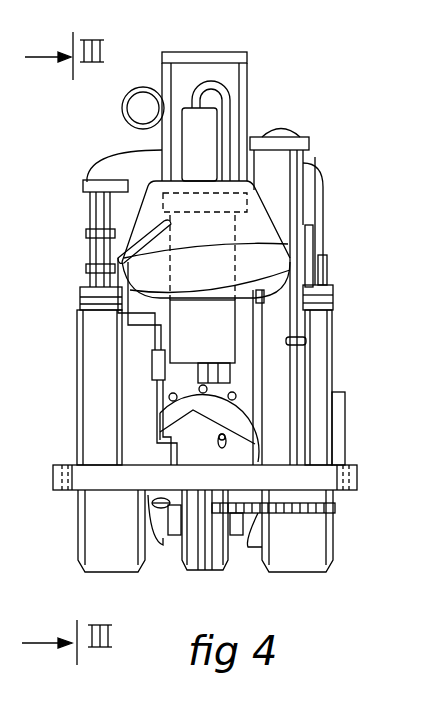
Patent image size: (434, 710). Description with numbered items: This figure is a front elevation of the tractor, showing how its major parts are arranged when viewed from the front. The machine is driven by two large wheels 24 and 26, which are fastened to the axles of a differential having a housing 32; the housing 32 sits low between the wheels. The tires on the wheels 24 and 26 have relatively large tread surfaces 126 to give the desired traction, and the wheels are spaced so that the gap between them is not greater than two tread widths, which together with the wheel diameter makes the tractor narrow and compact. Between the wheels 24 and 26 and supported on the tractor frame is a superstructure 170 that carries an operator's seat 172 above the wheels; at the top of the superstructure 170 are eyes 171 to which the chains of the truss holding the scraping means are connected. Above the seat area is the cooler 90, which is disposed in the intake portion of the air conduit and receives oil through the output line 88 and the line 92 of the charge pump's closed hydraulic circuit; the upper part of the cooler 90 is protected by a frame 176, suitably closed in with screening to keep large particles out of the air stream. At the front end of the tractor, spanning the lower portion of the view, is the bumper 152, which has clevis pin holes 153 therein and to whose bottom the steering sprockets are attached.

The wheel 24 is at (348, 368).
The wheel 26 is at (66, 413).
The housing 32 is at (256, 410).
The output line 88 is at (220, 90).
The cooler 90 is at (182, 108).
The line 92 is at (210, 378).
The tread surface 126 is at (124, 565).
The bumper 152 is at (95, 470).
The clevis pin holes 153 is at (62, 488).
The superstructure 170 is at (303, 322).
The eyes 171 is at (86, 290).
The operator's seat 172 is at (257, 216).
The frame 176 is at (242, 72).